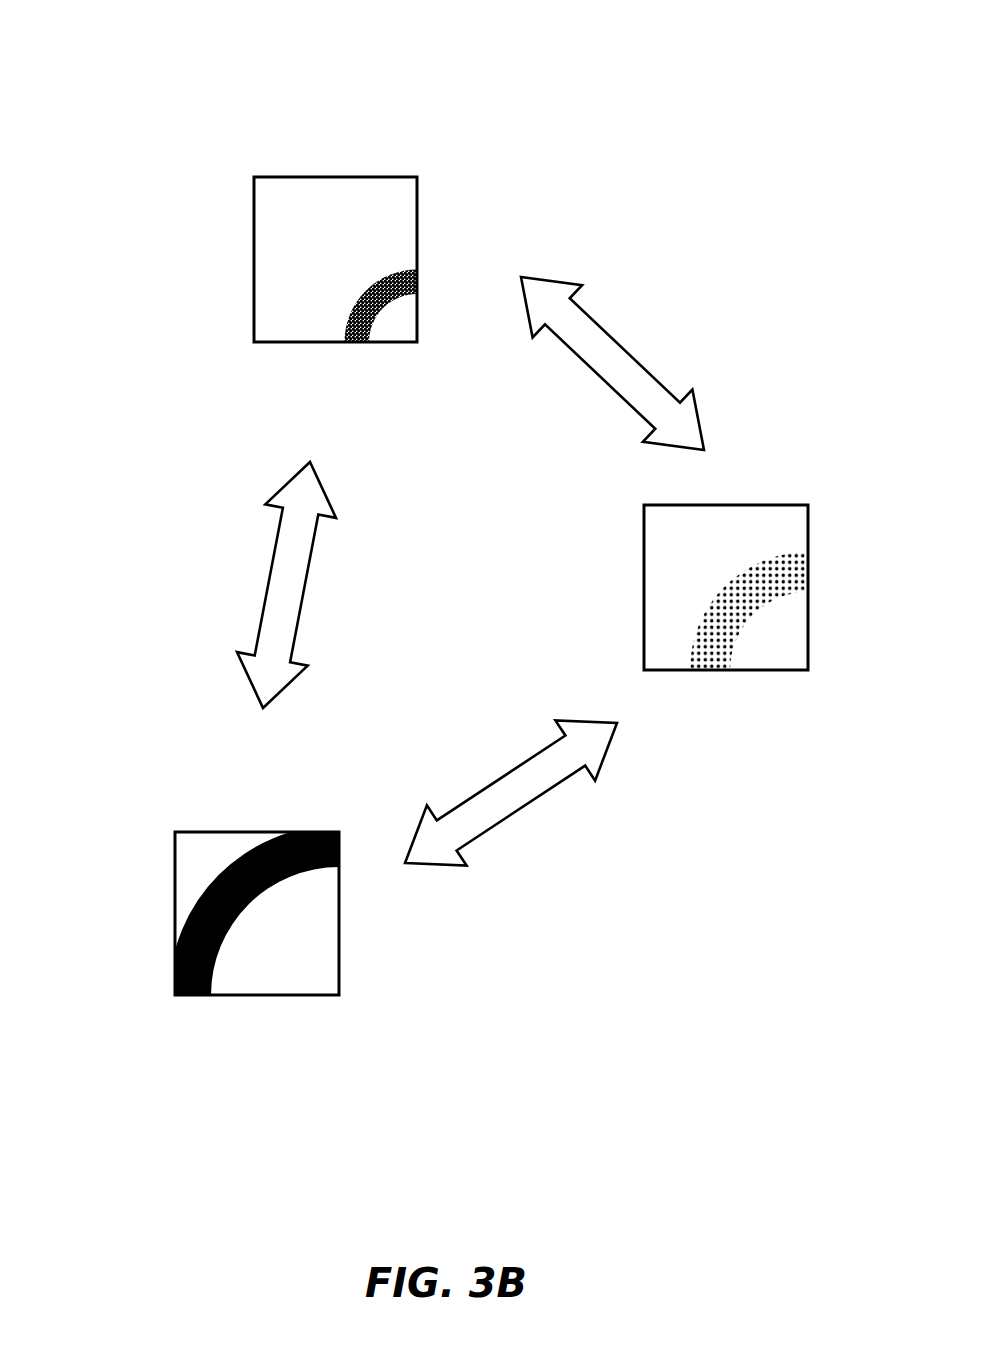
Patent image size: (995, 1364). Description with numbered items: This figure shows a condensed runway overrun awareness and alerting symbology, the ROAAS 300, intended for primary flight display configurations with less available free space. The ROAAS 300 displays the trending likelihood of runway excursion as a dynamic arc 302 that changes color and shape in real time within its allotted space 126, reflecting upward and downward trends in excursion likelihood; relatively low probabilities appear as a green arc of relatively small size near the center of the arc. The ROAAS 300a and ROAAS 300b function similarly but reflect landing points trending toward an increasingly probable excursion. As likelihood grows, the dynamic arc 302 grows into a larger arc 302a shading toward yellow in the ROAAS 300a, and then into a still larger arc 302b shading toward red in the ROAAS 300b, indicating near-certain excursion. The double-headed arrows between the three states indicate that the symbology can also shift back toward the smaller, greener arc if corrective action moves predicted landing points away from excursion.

The ROAAS 300 is at (181, 70).
The allotted space 126 is at (295, 263).
The dynamic arc 302 is at (370, 315).
The ROAAS 300a is at (818, 347).
The larger arc 302a is at (715, 633).
The ROAAS 300b is at (92, 727).
The still larger arc 302b is at (277, 880).